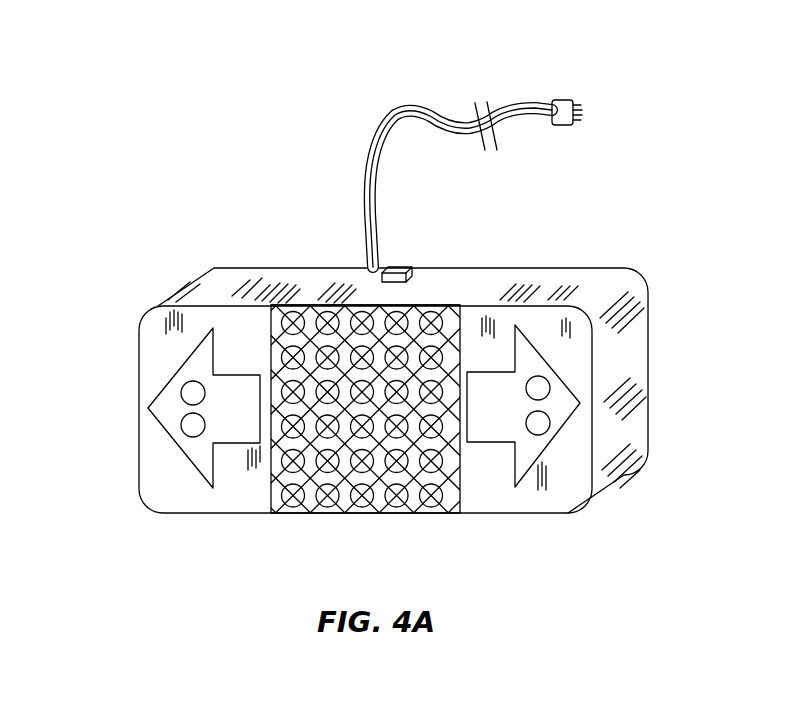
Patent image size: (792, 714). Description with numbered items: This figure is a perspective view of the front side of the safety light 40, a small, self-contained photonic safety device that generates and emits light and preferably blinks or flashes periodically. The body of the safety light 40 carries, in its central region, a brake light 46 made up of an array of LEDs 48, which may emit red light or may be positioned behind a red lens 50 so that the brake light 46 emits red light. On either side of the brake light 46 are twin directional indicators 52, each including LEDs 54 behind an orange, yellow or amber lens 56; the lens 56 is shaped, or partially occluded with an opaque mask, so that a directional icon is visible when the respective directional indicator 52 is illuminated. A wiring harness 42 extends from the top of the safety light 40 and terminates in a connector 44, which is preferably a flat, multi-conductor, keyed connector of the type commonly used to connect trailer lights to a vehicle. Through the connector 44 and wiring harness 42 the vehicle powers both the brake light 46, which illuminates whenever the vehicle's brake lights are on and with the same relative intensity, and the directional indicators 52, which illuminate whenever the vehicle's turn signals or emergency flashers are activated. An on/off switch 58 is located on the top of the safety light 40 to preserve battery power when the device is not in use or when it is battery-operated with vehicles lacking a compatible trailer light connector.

The safety light 40 is at (480, 266).
The wiring harness 42 is at (366, 195).
The connector 44 is at (573, 104).
The brake light 46 is at (310, 503).
The LED 48 is at (402, 494).
The red lens 50 is at (310, 318).
The directional indicator 52 is at (177, 406).
The LED 54 is at (541, 384).
The lens 56 is at (560, 403).
The on/off switch 58 is at (368, 267).